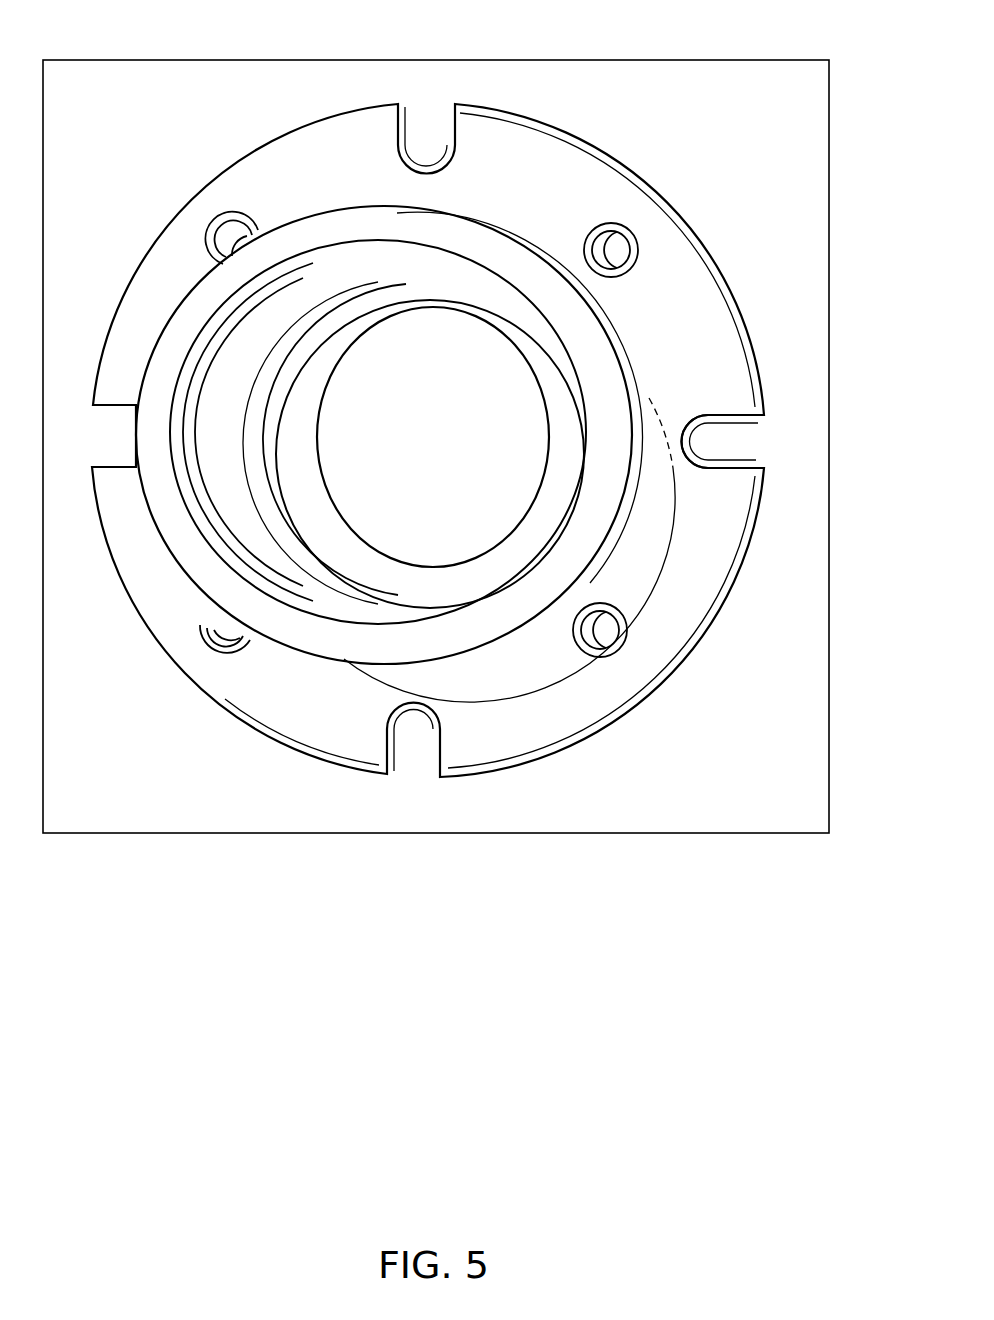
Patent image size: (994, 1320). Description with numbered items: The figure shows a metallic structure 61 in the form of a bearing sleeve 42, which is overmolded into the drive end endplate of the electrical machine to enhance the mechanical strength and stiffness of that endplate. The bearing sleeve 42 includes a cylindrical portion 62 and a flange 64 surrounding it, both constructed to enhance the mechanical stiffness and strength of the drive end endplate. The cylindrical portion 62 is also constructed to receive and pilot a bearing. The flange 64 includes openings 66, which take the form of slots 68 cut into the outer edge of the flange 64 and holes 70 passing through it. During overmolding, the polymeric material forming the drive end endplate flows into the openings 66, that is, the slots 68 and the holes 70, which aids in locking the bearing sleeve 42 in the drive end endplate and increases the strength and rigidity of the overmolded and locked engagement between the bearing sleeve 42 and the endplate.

The metallic structure 61 is at (672, 51).
The bearing sleeve 42 is at (443, 440).
The openings 66 is at (443, 440).
The flange 64 is at (725, 368).
The slots 68 is at (725, 455).
The cylindrical portion 62 is at (607, 368).
The holes 70 is at (622, 612).